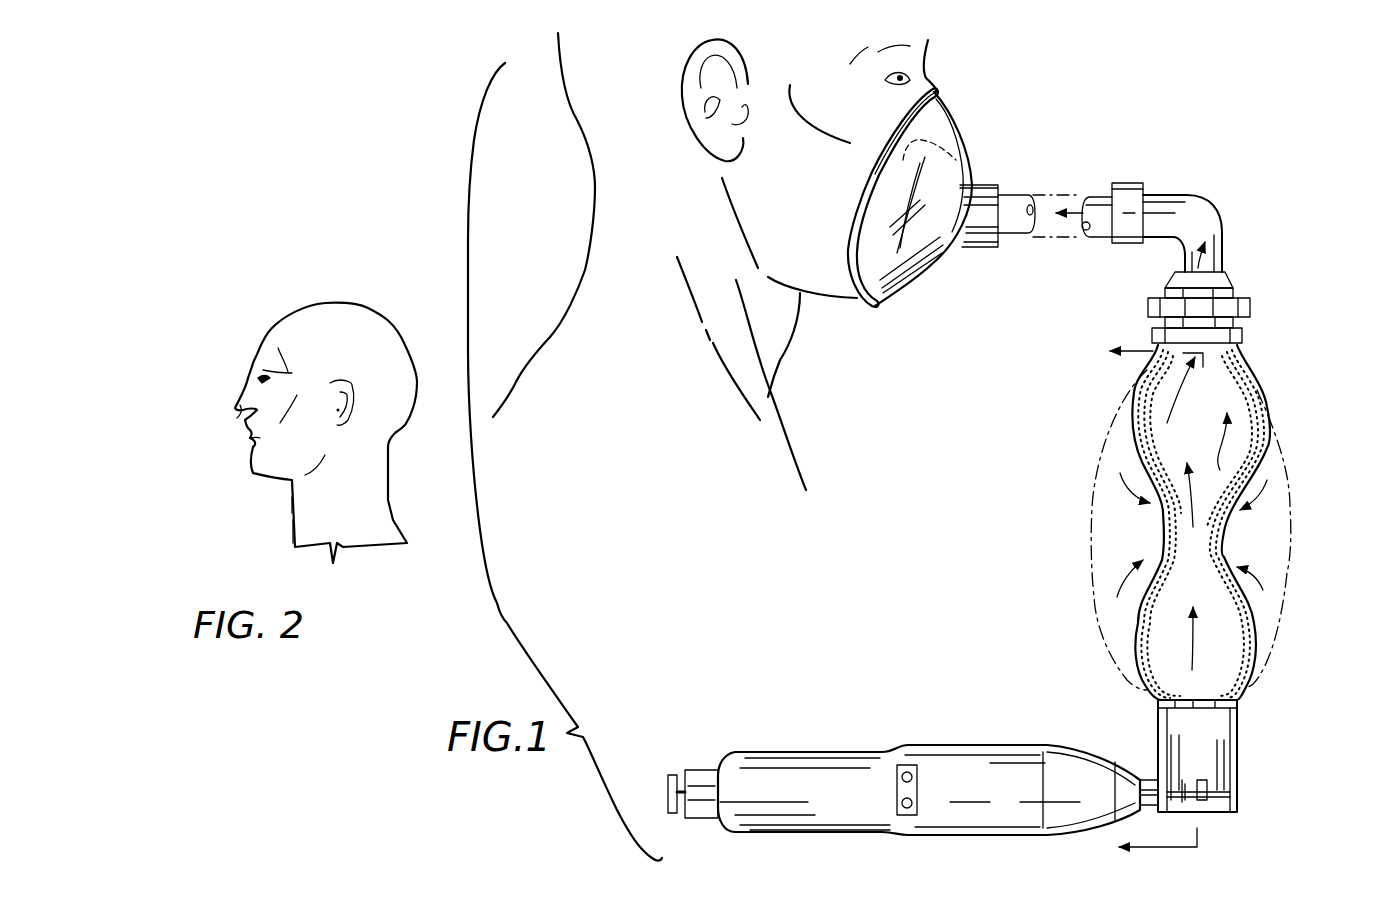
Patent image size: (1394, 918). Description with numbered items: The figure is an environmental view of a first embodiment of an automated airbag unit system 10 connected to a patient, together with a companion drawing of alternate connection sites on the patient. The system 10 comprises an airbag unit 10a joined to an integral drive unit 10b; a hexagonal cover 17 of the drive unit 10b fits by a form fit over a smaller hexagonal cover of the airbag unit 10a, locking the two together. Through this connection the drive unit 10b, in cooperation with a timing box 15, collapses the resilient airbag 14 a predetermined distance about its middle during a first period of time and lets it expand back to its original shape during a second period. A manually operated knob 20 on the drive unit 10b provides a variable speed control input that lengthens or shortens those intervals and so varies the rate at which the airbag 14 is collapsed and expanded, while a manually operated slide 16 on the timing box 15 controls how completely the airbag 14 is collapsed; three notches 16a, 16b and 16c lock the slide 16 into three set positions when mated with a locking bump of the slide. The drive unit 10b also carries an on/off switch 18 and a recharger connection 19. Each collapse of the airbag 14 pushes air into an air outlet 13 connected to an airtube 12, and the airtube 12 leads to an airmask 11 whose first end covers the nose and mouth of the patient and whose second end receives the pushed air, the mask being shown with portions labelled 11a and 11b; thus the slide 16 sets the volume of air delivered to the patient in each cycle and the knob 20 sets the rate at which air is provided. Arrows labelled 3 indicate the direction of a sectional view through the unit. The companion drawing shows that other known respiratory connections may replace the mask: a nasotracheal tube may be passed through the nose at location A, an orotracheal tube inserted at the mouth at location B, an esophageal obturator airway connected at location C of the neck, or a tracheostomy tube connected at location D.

In FIG. 1, the automated airbag unit system 10 is at (1237, 150).
In FIG. 1, the airbag unit 10a is at (1288, 403).
In FIG. 1, the integral drive unit 10b is at (953, 700).
In FIG. 1, the airmask 11 is at (975, 116).
In FIG. 1, the mask rim 11a is at (950, 98).
In FIG. 1, the mask connector 11b is at (988, 185).
In FIG. 1, the airtube 12 is at (1017, 187).
In FIG. 1, the air outlet 13 is at (1213, 196).
In FIG. 1, the resilient airbag 14 is at (1240, 362).
In FIG. 1, the timing box 15 is at (1238, 748).
In FIG. 1, the manually operated slide 16 is at (1207, 803).
In FIG. 1, the notch 16a is at (1187, 795).
In FIG. 1, the notch 16b is at (1187, 807).
In FIG. 1, the notch 16c is at (1217, 782).
In FIG. 1, the hexagonal cover 17 is at (1151, 777).
In FIG. 1, the on/off switch 18 is at (903, 765).
In FIG. 1, the recharger connection 19 is at (907, 815).
In FIG. 1, the manually operated knob 20 is at (672, 773).
In FIG. 1, the section line for FIG. 3 is at (1156, 599).
In FIG. 2, the location A is at (227, 418).
In FIG. 2, the location B is at (231, 436).
In FIG. 2, the location C is at (289, 508).
In FIG. 2, the location D is at (282, 536).